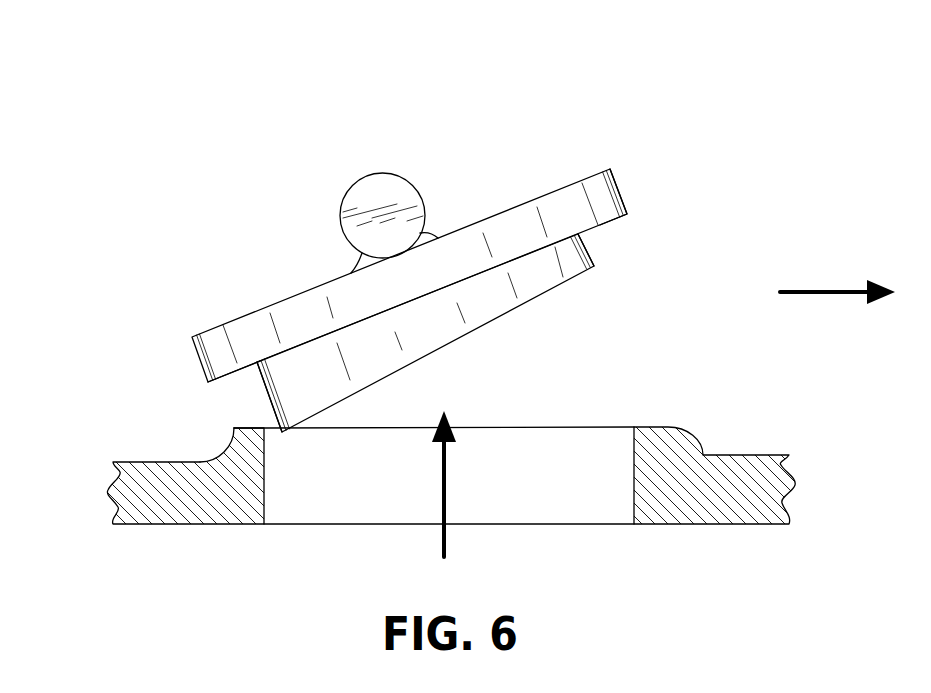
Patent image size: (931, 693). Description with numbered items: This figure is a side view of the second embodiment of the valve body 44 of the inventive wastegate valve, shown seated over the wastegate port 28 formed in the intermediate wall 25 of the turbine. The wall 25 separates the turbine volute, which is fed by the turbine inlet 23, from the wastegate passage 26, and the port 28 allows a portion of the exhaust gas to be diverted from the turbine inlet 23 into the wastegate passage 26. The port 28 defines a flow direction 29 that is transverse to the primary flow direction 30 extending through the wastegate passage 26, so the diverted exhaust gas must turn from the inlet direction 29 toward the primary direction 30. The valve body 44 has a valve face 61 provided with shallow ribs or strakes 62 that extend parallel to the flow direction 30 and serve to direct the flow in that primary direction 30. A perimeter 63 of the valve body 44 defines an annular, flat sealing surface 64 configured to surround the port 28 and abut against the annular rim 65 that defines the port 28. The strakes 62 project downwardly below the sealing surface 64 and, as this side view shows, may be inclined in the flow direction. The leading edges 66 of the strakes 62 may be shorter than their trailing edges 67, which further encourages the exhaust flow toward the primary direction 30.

The turbine inlet 23 is at (310, 589).
The intermediate wall 25 is at (222, 502).
The wastegate passage 26 is at (720, 370).
The wastegate port 28 is at (246, 452).
The flow direction 29 is at (447, 482).
The primary flow direction 30 is at (833, 288).
The valve body 44 is at (735, 116).
The valve face 61 is at (214, 393).
The strakes 62 is at (500, 345).
The perimeter 63 is at (623, 192).
The sealing surface 64 is at (612, 222).
The annular rim 65 is at (240, 428).
The leading edges 66 is at (596, 266).
The trailing edges 67 is at (263, 390).